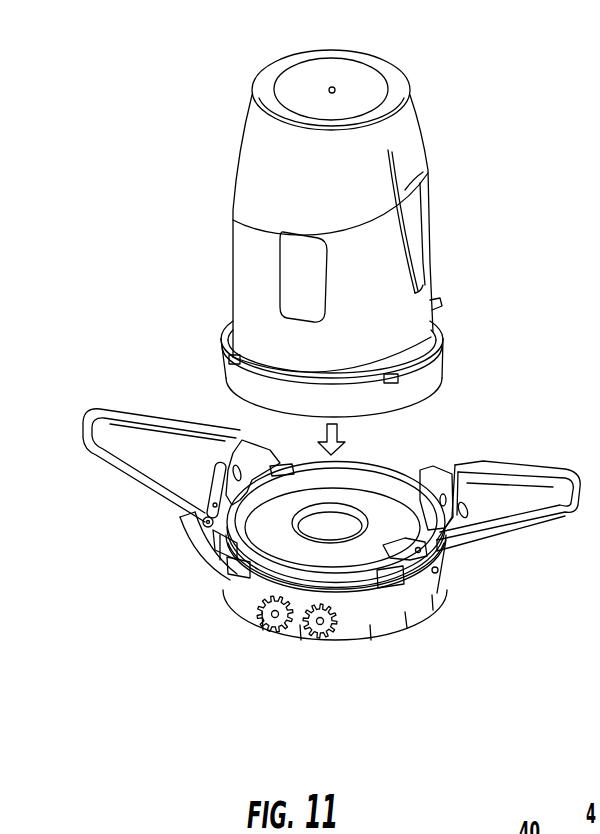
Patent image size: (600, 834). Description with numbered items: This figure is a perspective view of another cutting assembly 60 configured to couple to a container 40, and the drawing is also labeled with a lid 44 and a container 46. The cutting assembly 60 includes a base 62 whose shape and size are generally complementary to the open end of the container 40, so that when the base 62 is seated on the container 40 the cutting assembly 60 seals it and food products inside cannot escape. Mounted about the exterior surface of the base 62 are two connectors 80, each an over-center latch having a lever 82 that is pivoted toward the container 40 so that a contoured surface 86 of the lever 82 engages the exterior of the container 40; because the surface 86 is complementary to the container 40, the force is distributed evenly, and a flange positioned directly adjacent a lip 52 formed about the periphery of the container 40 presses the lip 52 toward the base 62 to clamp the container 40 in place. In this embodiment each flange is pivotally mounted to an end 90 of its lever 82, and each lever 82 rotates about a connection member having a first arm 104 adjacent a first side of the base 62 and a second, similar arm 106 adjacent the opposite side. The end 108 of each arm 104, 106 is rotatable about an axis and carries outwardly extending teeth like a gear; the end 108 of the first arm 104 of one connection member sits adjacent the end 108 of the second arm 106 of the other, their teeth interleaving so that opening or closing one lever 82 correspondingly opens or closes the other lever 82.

The container 40 is at (190, 84).
The lid 44 is at (345, 78).
The container 46 is at (358, 165).
The lip 52 is at (442, 332).
The cutting assembly 60 is at (208, 634).
The base 62 is at (430, 612).
The connectors 80 is at (151, 522).
The lever 82 is at (147, 447).
The contoured surface 86 is at (237, 450).
The end 90 is at (210, 525).
The first arm 104 is at (390, 612).
The second arm 106 is at (220, 592).
The end 108 is at (272, 622).